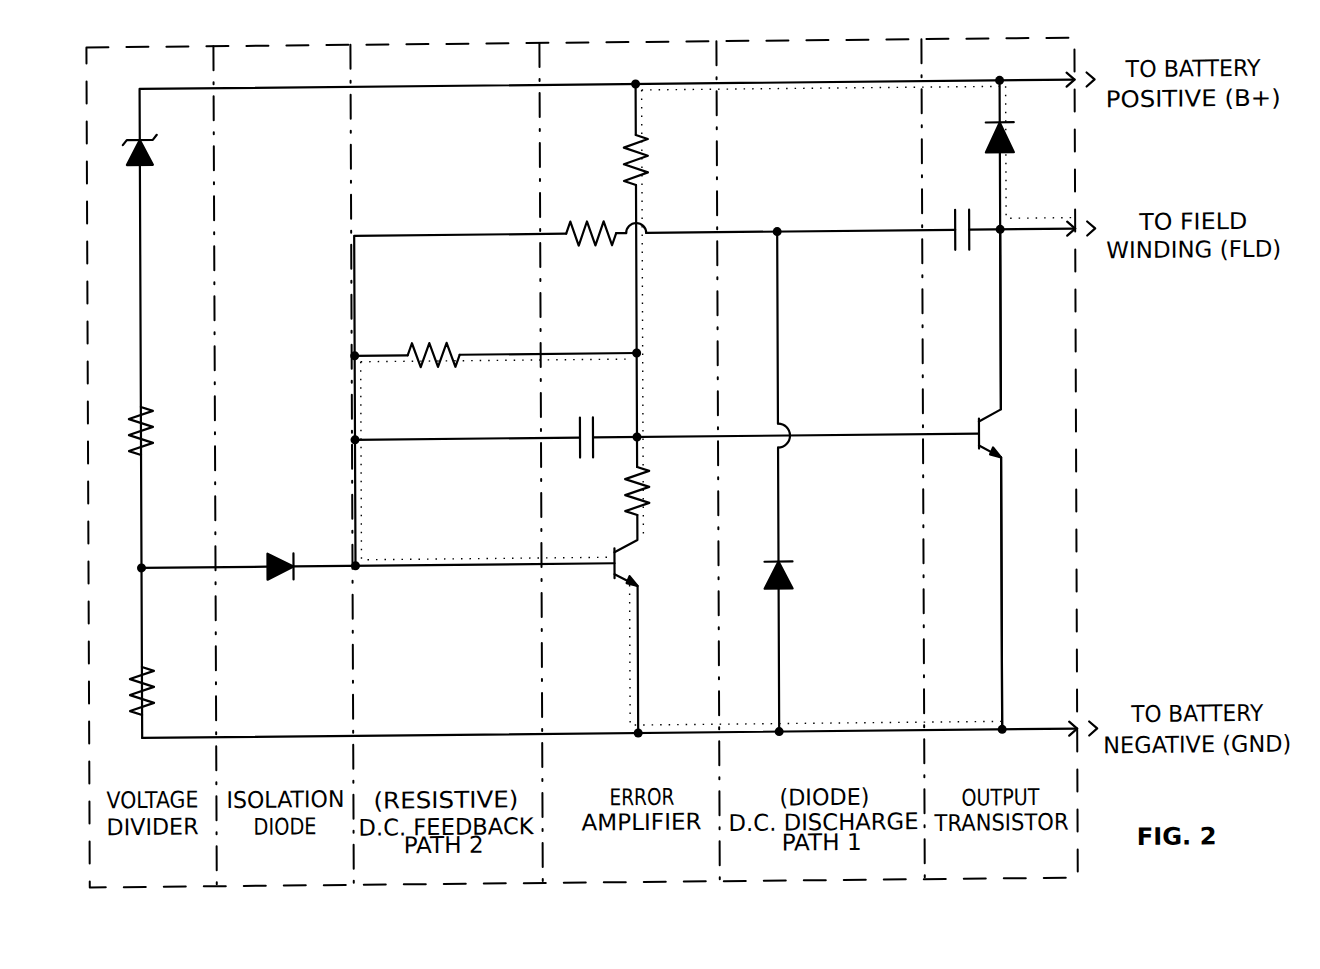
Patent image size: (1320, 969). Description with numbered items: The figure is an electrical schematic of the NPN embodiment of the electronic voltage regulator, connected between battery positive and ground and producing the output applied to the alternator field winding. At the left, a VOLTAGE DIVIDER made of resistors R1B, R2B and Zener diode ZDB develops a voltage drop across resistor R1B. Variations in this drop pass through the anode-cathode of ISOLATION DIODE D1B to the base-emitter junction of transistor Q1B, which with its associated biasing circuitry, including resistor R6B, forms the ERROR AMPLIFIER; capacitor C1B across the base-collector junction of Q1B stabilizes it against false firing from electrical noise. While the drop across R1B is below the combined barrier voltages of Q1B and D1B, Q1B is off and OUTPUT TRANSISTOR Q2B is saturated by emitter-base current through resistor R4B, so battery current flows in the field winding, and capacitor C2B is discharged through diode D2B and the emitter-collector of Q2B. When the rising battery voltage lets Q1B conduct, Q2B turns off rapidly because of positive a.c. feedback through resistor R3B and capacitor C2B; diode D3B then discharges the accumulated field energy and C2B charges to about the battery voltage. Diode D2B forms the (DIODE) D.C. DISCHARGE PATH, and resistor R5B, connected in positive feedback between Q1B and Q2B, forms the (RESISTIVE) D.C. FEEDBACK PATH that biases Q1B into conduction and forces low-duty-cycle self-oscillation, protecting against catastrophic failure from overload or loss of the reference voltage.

The Zener diode ZDB is at (152, 150).
The voltage divider resistor R1B is at (150, 666).
The voltage divider resistor R2B is at (150, 428).
The isolation diode D1B is at (278, 548).
The feedback resistor R5B is at (434, 342).
The capacitor C1B is at (596, 428).
The resistor R3B is at (590, 223).
The resistor R4B is at (645, 157).
The error amplifier resistor R6B is at (629, 500).
The error amplifier transistor Q1B is at (630, 565).
The discharge diode D2B is at (790, 575).
The output transistor Q2B is at (993, 438).
The capacitor C2B is at (953, 225).
The diode D3B is at (1013, 138).